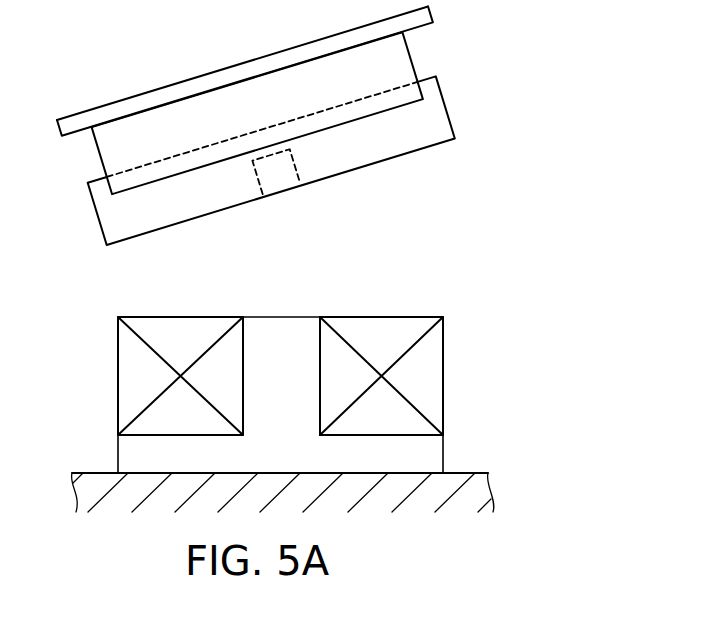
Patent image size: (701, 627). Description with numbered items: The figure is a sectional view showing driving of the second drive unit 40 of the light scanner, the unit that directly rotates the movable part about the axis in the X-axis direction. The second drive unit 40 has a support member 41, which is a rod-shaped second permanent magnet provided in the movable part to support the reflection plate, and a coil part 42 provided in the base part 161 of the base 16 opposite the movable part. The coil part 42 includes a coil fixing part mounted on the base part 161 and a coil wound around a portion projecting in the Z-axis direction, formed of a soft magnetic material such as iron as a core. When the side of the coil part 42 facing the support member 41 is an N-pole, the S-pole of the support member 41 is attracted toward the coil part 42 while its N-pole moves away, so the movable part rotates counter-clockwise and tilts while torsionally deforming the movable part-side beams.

The base 16 is at (452, 473).
The base part 161 is at (324, 478).
The second drive unit 40 is at (316, 240).
The support member 41 is at (290, 163).
The coil part 42 is at (321, 395).